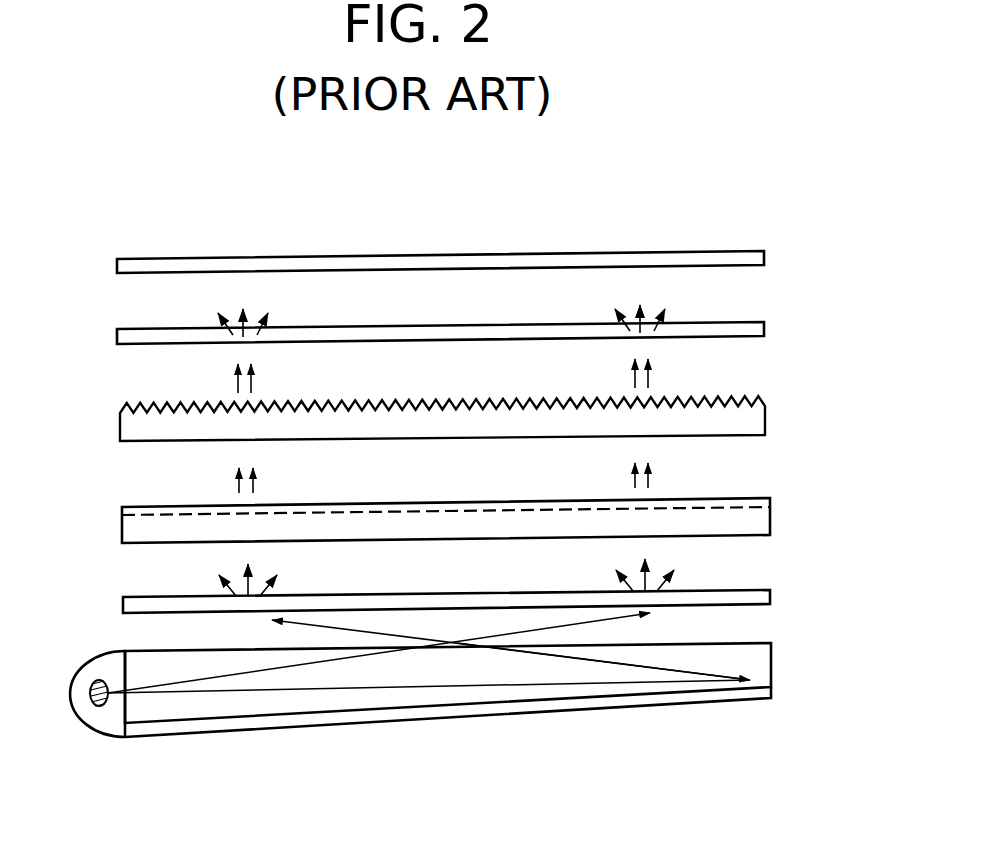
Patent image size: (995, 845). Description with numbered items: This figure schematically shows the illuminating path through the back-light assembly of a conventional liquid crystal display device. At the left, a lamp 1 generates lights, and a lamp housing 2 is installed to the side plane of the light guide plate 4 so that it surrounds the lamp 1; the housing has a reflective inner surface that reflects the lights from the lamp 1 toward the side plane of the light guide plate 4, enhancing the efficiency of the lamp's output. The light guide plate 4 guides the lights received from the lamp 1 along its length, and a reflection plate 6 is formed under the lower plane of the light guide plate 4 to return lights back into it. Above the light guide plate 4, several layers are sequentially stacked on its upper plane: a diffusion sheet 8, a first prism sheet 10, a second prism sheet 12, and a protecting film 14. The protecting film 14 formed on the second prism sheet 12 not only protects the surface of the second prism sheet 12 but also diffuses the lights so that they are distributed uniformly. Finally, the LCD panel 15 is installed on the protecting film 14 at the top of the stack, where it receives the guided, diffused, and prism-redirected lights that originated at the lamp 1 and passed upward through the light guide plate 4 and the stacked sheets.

The lamp 1 is at (96, 706).
The lamp housing 2 is at (92, 652).
The light guide plate 4 is at (771, 668).
The reflection plate 6 is at (771, 690).
The diffusion sheet 8 is at (770, 597).
The first prism sheet 10 is at (770, 515).
The second prism sheet 12 is at (765, 422).
The protecting film 14 is at (764, 330).
The LCD panel 15 is at (764, 258).